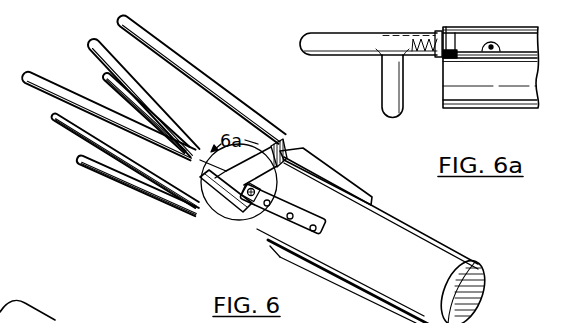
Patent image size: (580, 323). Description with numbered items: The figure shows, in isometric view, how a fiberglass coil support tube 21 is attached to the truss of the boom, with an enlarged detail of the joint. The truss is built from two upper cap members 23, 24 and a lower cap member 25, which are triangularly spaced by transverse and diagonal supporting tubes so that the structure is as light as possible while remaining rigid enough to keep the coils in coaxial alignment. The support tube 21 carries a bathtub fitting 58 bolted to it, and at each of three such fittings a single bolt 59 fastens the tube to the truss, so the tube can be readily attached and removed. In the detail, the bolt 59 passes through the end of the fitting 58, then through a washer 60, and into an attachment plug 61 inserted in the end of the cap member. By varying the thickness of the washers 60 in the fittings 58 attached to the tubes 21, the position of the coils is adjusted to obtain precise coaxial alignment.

In FIG. 6, the fiberglass support tube 21 is at (418, 232).
In FIG. 6, the upper cap member 23 is at (201, 72).
In FIG. 6, the upper cap member 24 is at (68, 89).
In FIG. 6, the lower cap member 25 is at (117, 182).
In FIG. 6, the bathtub fitting 58 is at (322, 160).
In FIG. 6a, the bolt 59 is at (453, 37).
In FIG. 6a, the washer 60 is at (437, 58).
In FIG. 6a, the attachment plug 61 is at (425, 37).